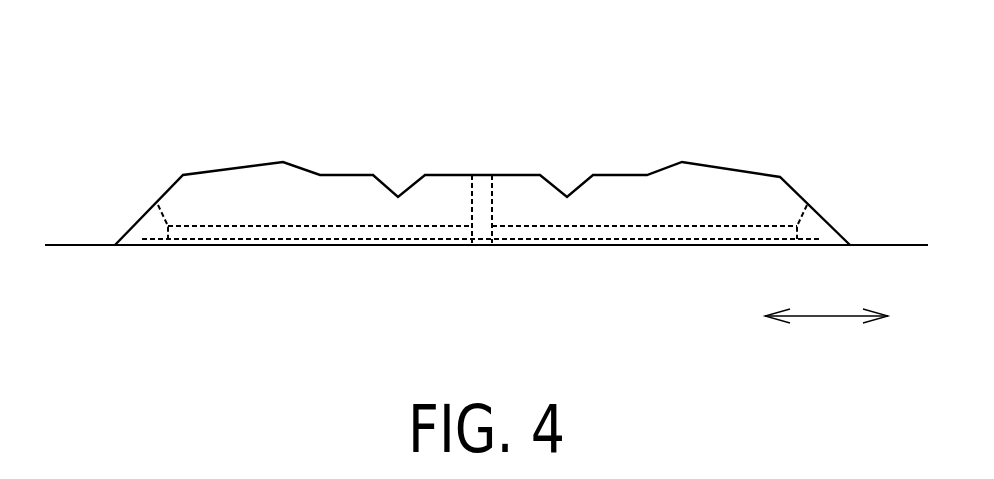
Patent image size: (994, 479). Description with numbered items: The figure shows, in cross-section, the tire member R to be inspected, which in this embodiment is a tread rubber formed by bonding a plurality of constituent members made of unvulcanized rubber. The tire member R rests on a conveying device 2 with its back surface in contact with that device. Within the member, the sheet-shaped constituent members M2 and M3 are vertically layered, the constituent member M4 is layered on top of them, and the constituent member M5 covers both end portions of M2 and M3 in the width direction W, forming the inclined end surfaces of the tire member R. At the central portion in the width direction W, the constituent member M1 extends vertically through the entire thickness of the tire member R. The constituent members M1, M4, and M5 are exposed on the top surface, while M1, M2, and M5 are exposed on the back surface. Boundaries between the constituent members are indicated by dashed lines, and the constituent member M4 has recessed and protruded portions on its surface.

The conveying device 2 is at (83, 253).
The tire member R is at (245, 160).
The constituent member (earth tread rubber) M1 is at (488, 183).
The constituent member (adhesive rubber) M2 is at (333, 246).
The constituent member (undertread rubber) M3 is at (420, 240).
The constituent member (cap rubber) M4 is at (345, 187).
The constituent member (end portion rubber) M5 is at (140, 207).
The width direction W is at (826, 304).